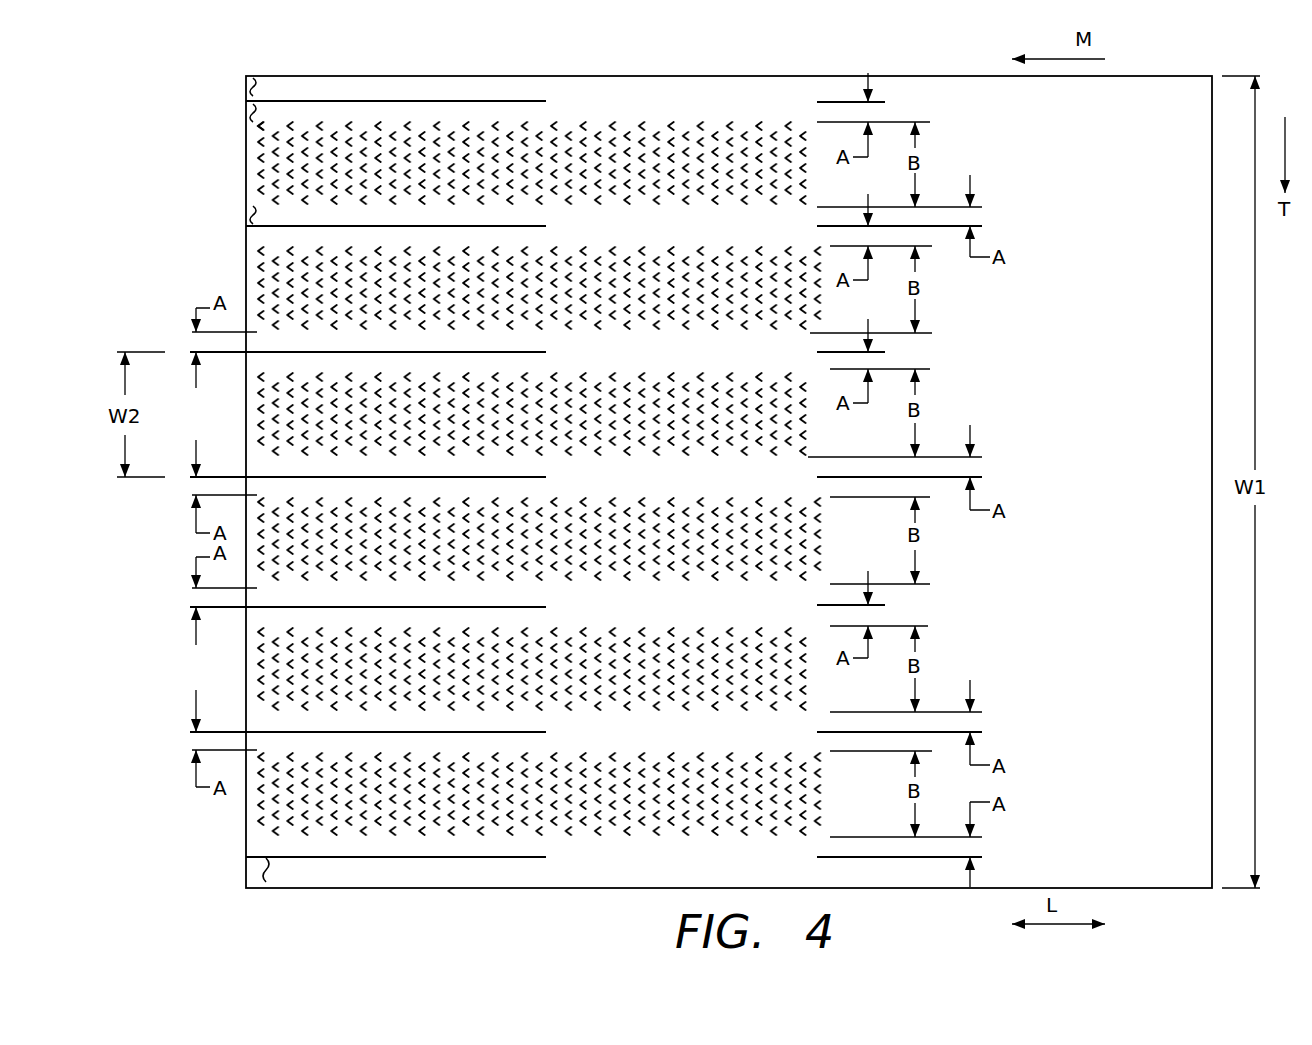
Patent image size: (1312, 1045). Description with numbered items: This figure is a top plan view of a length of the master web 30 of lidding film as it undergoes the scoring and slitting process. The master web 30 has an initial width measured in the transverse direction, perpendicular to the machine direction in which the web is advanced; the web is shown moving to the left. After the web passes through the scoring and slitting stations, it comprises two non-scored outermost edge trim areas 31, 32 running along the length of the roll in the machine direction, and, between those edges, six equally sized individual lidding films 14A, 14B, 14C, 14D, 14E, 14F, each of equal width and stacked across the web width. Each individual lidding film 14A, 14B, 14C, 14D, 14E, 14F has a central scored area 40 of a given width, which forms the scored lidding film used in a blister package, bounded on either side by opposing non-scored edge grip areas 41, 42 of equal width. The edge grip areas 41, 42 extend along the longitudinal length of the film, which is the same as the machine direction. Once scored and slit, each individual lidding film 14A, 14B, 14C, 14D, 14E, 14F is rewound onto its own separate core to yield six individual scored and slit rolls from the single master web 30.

The master web 30 is at (1169, 891).
The edge trim area 31 is at (250, 89).
The edge trim area 32 is at (252, 868).
The central scored area 40 is at (284, 155).
The edge grip area 41 is at (250, 114).
The edge grip area 42 is at (250, 218).
The individual lidding film 14A is at (246, 178).
The individual lidding film 14B is at (246, 272).
The individual lidding film 14C is at (246, 420).
The individual lidding film 14D is at (246, 545).
The individual lidding film 14E is at (246, 678).
The individual lidding film 14F is at (246, 823).